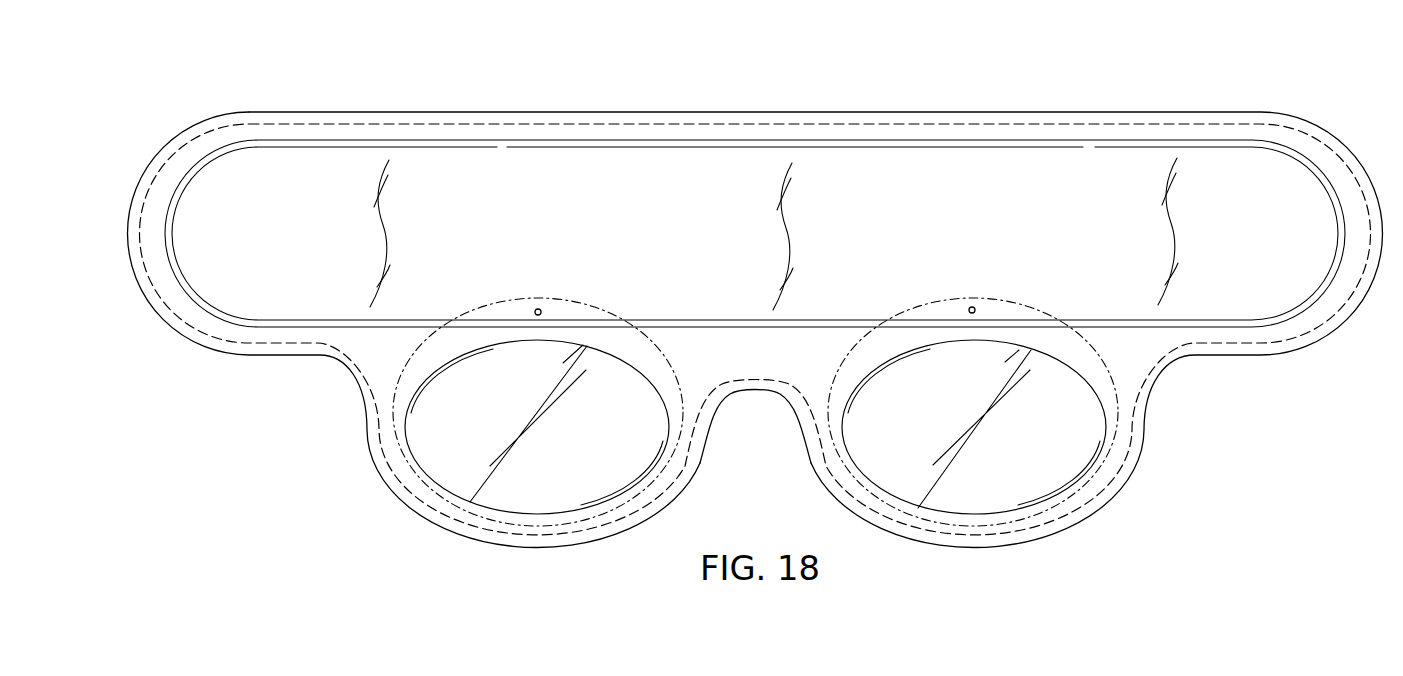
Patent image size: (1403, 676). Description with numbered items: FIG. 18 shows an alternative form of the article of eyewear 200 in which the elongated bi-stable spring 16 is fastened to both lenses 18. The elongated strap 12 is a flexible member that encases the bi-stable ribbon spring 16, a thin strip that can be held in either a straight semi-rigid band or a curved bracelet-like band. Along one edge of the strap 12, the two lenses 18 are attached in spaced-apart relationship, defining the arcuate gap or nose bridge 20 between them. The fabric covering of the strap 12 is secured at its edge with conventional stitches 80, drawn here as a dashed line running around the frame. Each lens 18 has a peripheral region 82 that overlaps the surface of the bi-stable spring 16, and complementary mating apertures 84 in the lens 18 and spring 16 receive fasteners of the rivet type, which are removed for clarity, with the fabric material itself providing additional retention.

The article of eyewear 200 is at (919, 88).
The elongated strap 12 is at (1224, 112).
The bi-stable ribbon spring 16 is at (440, 158).
The lens 18 is at (577, 500).
The nose bridge 20 is at (773, 393).
The stitches 80 is at (1095, 124).
The peripheral region 82 is at (1018, 305).
The apertures 84 is at (968, 307).